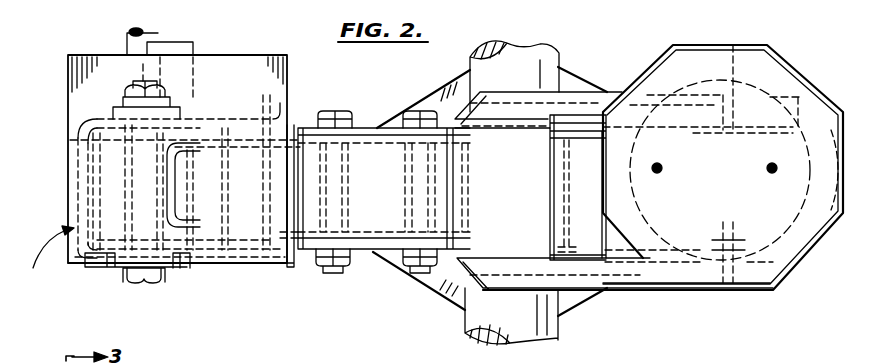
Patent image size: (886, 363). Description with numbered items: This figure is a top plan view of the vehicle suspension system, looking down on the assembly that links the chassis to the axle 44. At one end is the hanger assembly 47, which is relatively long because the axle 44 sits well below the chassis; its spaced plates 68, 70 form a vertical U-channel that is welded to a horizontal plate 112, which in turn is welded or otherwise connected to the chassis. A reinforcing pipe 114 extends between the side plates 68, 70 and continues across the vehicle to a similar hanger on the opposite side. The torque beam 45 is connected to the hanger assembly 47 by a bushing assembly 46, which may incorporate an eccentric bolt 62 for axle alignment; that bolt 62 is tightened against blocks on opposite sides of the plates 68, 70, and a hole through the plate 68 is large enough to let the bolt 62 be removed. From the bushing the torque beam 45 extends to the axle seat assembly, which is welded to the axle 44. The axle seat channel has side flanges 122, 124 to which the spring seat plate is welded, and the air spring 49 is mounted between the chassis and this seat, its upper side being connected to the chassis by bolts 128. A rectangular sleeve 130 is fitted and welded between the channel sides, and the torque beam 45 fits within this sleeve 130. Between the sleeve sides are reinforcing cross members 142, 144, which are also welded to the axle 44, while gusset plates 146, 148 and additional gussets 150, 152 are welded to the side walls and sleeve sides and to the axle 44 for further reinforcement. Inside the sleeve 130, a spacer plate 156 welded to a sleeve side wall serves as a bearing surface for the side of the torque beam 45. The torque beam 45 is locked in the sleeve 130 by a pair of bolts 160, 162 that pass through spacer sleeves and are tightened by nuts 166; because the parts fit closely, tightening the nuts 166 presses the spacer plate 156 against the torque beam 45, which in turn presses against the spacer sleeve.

The horizontal plate 112 is at (106, 57).
The reinforcing pipe 114 is at (158, 33).
The plate 70 is at (210, 118).
The hanger assembly 47 is at (48, 257).
The bushing assembly 46 is at (77, 268).
The eccentric bolt 62 is at (152, 281).
The plate 68 is at (222, 260).
The torque beam 45 is at (293, 268).
The reinforcing cross member 142 is at (466, 197).
The bolt 160 is at (330, 109).
The bolt 162 is at (415, 110).
The spacer plate 156 is at (301, 268).
The nut 166 is at (402, 273).
The gusset 152 is at (444, 81).
The gusset 150 is at (432, 290).
The axle 44 is at (513, 332).
The gusset plate 148 is at (568, 66).
The reinforcing cross member 144 is at (584, 110).
The side flange 122 is at (615, 284).
The gusset plate 146 is at (574, 304).
The air spring 49 is at (823, 95).
The side flange 124 is at (618, 107).
The rectangular sleeve 130 is at (741, 67).
The bolt 128 is at (767, 168).